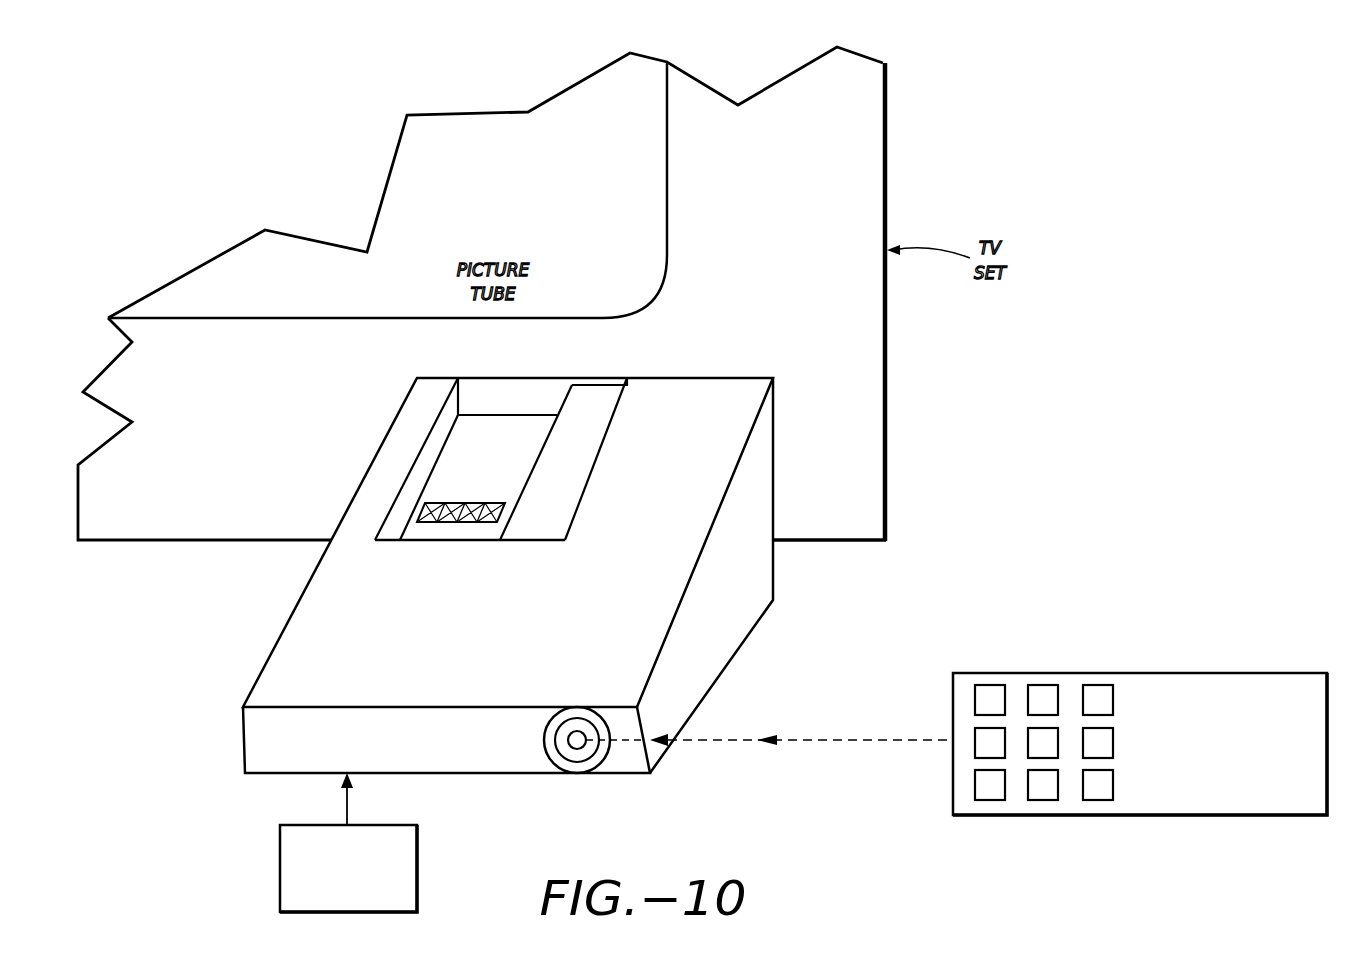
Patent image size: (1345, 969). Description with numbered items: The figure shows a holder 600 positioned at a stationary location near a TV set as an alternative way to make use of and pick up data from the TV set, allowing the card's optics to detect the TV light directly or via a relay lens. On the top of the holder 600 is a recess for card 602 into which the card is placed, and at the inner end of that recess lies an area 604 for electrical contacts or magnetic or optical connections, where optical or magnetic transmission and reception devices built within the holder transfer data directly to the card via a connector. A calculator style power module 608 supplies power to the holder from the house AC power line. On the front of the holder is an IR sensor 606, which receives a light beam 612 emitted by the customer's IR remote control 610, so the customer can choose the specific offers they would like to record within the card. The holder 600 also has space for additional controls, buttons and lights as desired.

The holder 600 is at (773, 563).
The recess for card 602 is at (487, 450).
The optical or magnetic transmission and reception devices 604 is at (422, 513).
The IR sensor 606 is at (568, 782).
The calculator style power module 608 is at (417, 858).
The IR remote control 610 is at (1143, 673).
The light beam 612 is at (815, 742).